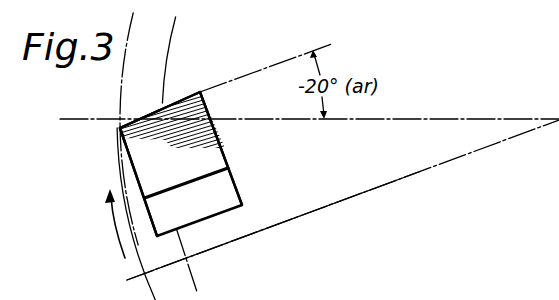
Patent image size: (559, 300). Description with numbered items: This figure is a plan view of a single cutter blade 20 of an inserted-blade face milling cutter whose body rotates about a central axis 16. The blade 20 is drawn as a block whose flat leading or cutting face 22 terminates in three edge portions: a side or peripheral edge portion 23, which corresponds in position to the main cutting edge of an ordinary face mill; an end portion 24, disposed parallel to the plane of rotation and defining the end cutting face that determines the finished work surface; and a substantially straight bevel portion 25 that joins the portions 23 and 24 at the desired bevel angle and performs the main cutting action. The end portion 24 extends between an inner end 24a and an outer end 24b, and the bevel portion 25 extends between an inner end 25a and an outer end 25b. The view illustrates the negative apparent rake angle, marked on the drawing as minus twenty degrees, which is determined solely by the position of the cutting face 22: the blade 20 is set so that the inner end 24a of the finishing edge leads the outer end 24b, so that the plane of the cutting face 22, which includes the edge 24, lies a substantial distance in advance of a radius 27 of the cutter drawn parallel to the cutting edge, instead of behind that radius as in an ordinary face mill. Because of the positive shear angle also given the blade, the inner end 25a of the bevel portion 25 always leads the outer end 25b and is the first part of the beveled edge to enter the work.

The central axis 16 is at (558, 121).
The cutter blade 20 is at (242, 192).
The cutting face 22 is at (222, 151).
The side edge portion 23 is at (133, 172).
The end portion 24 is at (187, 96).
The inner end of finishing edge portion 24a is at (202, 90).
The outer end of finishing edge portion 24b is at (164, 100).
The bevel portion 25 is at (135, 121).
The inner end of bevel edge portion 25a is at (162, 103).
The outer end of bevel edge portion 25b is at (120, 128).
The radius 27 is at (345, 198).